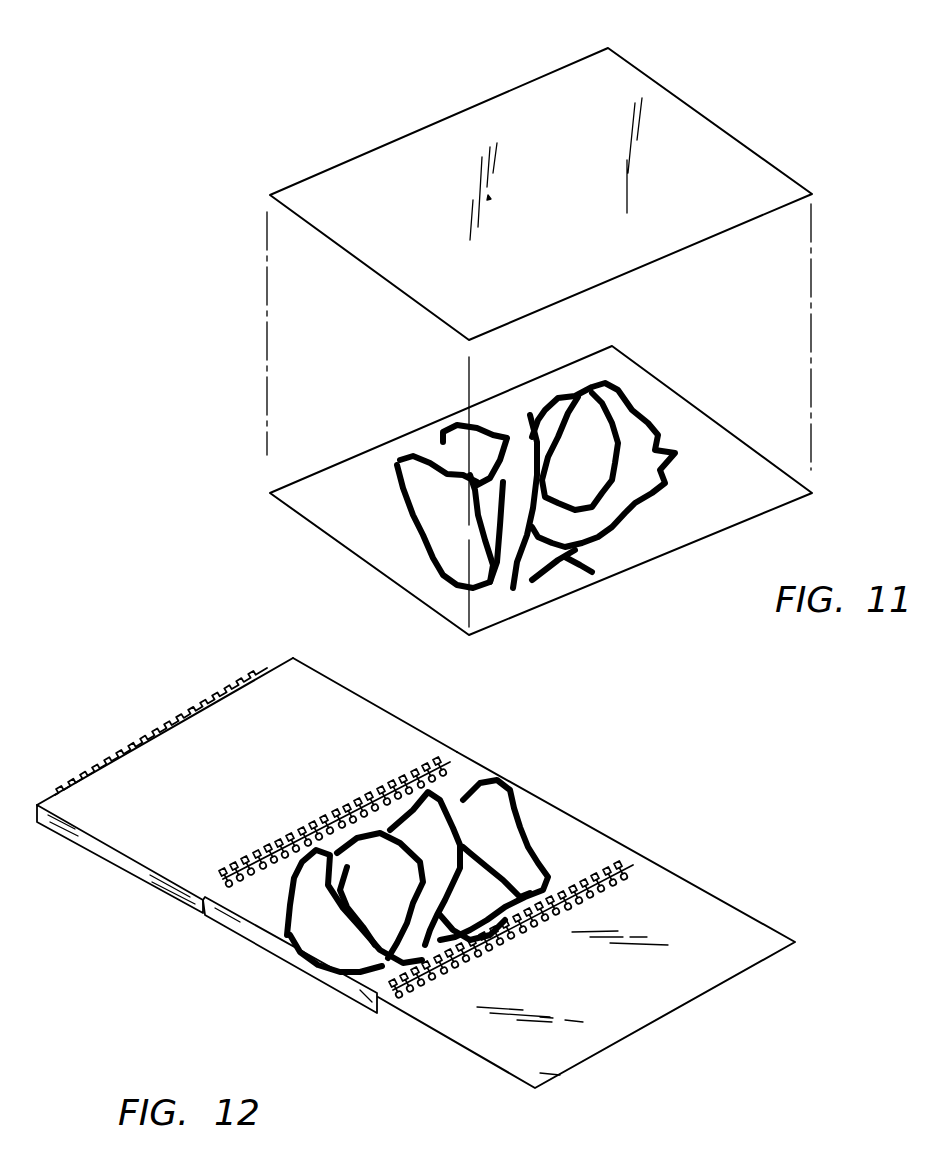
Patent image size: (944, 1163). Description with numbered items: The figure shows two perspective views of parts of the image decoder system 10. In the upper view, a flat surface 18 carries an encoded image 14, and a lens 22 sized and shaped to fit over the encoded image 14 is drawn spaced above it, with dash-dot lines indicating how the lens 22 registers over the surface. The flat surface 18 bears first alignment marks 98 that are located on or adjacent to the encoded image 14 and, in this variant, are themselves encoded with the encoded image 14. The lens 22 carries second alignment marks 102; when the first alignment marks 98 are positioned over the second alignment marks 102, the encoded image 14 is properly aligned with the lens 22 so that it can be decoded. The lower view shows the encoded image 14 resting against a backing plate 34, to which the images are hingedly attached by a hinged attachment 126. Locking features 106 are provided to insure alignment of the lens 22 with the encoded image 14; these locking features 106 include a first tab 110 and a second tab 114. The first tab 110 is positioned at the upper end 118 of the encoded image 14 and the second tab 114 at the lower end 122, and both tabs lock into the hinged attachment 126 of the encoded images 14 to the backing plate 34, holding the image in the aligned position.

In FIG. 11, the image decoder system 10 is at (292, 121).
In FIG. 12, the image decoder system 10 is at (593, 772).
In FIG. 11, the encoded images 14 is at (603, 517).
In FIG. 12, the encoded images 14 is at (320, 953).
In FIG. 11, the flat surface 18 is at (773, 495).
In FIG. 11, the lens 22 is at (620, 82).
In FIG. 12, the lens 22 is at (708, 908).
In FIG. 12, the backing plate 34 is at (573, 840).
In FIG. 11, the first alignment marks 98 is at (630, 453).
In FIG. 11, the second alignment marks 102 is at (628, 163).
In FIG. 12, the locking features 106 is at (152, 732).
In FIG. 12, the first tab 110 is at (267, 668).
In FIG. 12, the second tab 114 is at (55, 785).
In FIG. 12, the upper end 118 is at (332, 678).
In FIG. 12, the lower end 122 is at (116, 860).
In FIG. 12, the hinged attachment 126 is at (442, 758).